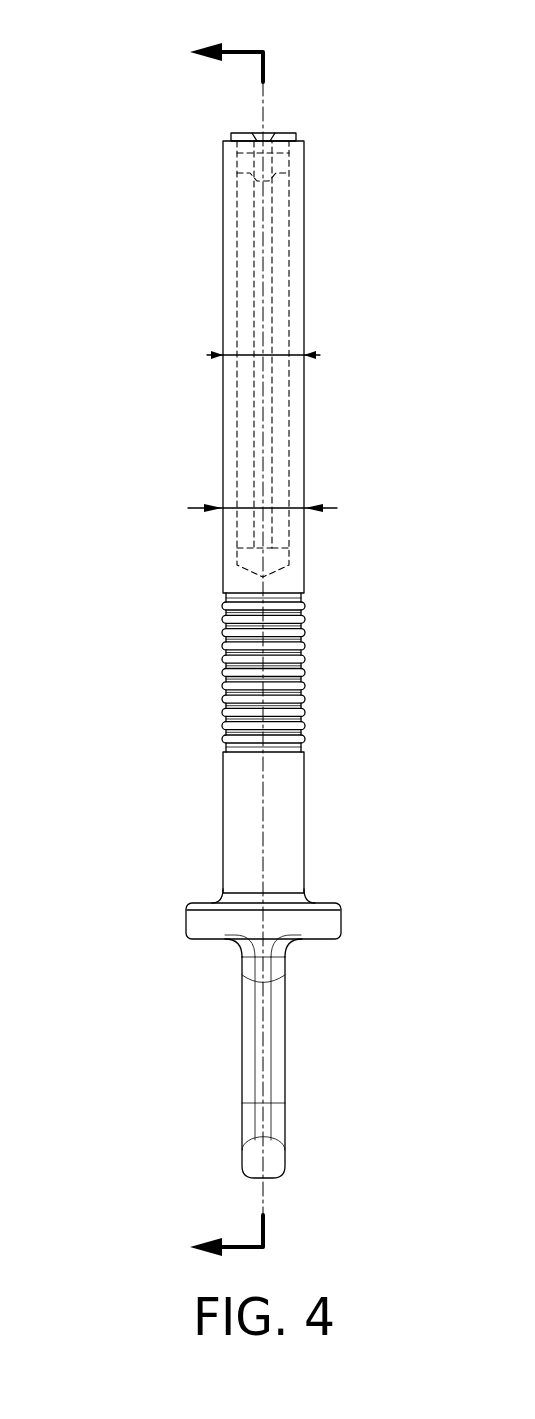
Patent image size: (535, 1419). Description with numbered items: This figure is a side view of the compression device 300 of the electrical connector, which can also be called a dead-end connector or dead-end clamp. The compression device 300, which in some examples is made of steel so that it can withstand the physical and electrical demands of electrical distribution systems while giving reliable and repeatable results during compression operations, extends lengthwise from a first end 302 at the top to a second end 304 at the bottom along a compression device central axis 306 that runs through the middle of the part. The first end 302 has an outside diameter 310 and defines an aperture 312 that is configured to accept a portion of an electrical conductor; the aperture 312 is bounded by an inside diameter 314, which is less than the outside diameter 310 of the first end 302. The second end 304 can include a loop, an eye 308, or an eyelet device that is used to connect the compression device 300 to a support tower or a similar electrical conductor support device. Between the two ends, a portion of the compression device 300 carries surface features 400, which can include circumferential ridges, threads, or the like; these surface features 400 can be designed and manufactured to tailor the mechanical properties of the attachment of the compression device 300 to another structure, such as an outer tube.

The compression device 300 is at (158, 411).
The first end 302 is at (322, 144).
The second end 304 is at (294, 1180).
The compression device central axis 306 is at (263, 810).
The eye 308 is at (285, 1113).
The outside diameter 310 is at (248, 505).
The aperture 312 is at (289, 114).
The inside diameter 314 is at (248, 352).
The surface features 400 is at (305, 659).